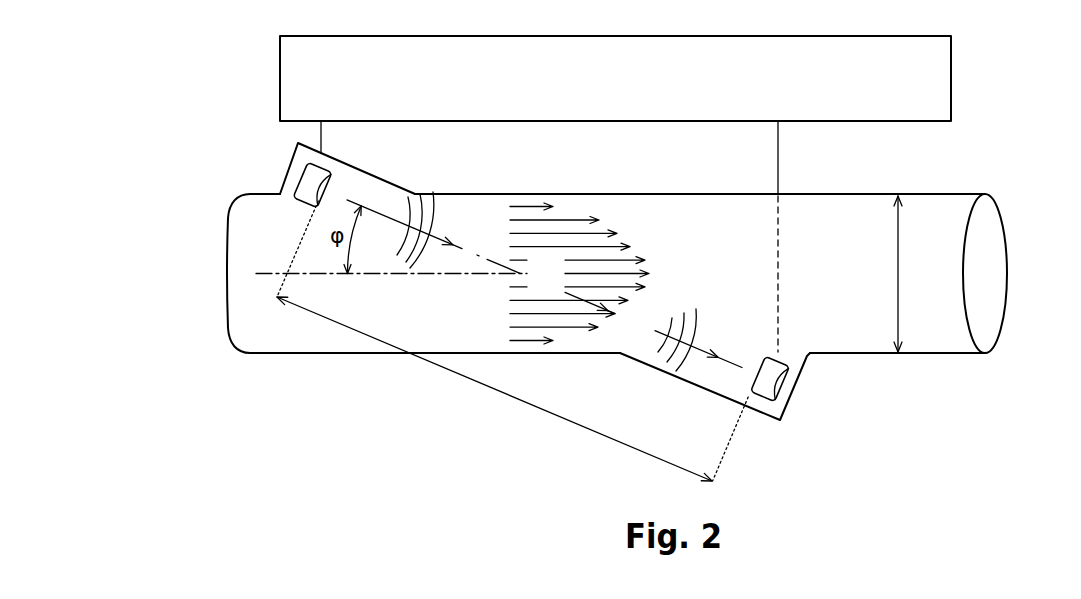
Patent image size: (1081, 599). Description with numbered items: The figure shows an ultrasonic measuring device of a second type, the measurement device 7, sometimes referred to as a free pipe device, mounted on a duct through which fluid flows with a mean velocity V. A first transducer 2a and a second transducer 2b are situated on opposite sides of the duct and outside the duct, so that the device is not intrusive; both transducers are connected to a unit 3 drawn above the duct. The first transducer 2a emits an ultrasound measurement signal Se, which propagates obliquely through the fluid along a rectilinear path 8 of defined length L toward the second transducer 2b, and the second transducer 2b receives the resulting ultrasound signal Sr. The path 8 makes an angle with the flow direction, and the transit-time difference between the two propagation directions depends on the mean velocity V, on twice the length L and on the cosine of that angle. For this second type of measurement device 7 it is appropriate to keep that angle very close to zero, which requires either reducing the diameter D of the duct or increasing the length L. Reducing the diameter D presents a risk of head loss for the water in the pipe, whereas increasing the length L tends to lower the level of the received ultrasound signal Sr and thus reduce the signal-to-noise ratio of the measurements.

The control and evaluation unit 3 is at (951, 86).
The second type of measurement device 7 is at (1031, 141).
The first transducer 2a is at (302, 182).
The second transducer 2b is at (797, 385).
The rectilinear path 8 is at (645, 327).
The ultrasound measurement signal Se is at (436, 212).
The received ultrasound signal Sr is at (698, 312).
The mean fluid velocity V is at (554, 263).
The diameter of the duct D is at (889, 274).
The length of the rectilinear path L is at (494, 388).